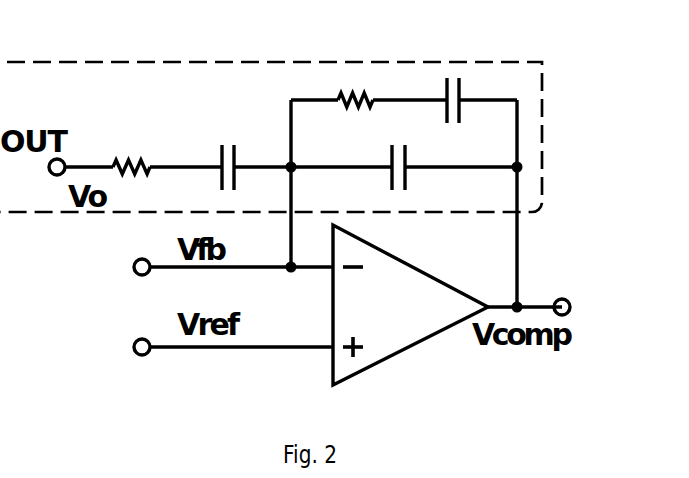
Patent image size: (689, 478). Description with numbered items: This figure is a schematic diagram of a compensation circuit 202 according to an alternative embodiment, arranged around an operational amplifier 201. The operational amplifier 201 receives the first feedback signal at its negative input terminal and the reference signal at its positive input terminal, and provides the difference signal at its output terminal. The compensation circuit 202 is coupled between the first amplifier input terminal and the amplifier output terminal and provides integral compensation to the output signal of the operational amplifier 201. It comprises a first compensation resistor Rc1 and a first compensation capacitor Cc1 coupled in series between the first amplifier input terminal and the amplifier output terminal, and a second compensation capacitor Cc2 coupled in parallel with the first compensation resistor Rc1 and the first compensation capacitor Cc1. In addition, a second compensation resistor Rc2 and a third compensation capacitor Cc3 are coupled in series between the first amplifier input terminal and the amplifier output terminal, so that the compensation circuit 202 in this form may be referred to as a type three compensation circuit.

The operational amplifier 201 is at (426, 320).
The compensation circuit 202 is at (537, 126).
The first compensation resistor Rc1 is at (344, 119).
The second compensation resistor Rc2 is at (125, 148).
The first compensation capacitor Cc1 is at (479, 116).
The second compensation capacitor Cc2 is at (432, 177).
The third compensation capacitor Cc3 is at (231, 149).